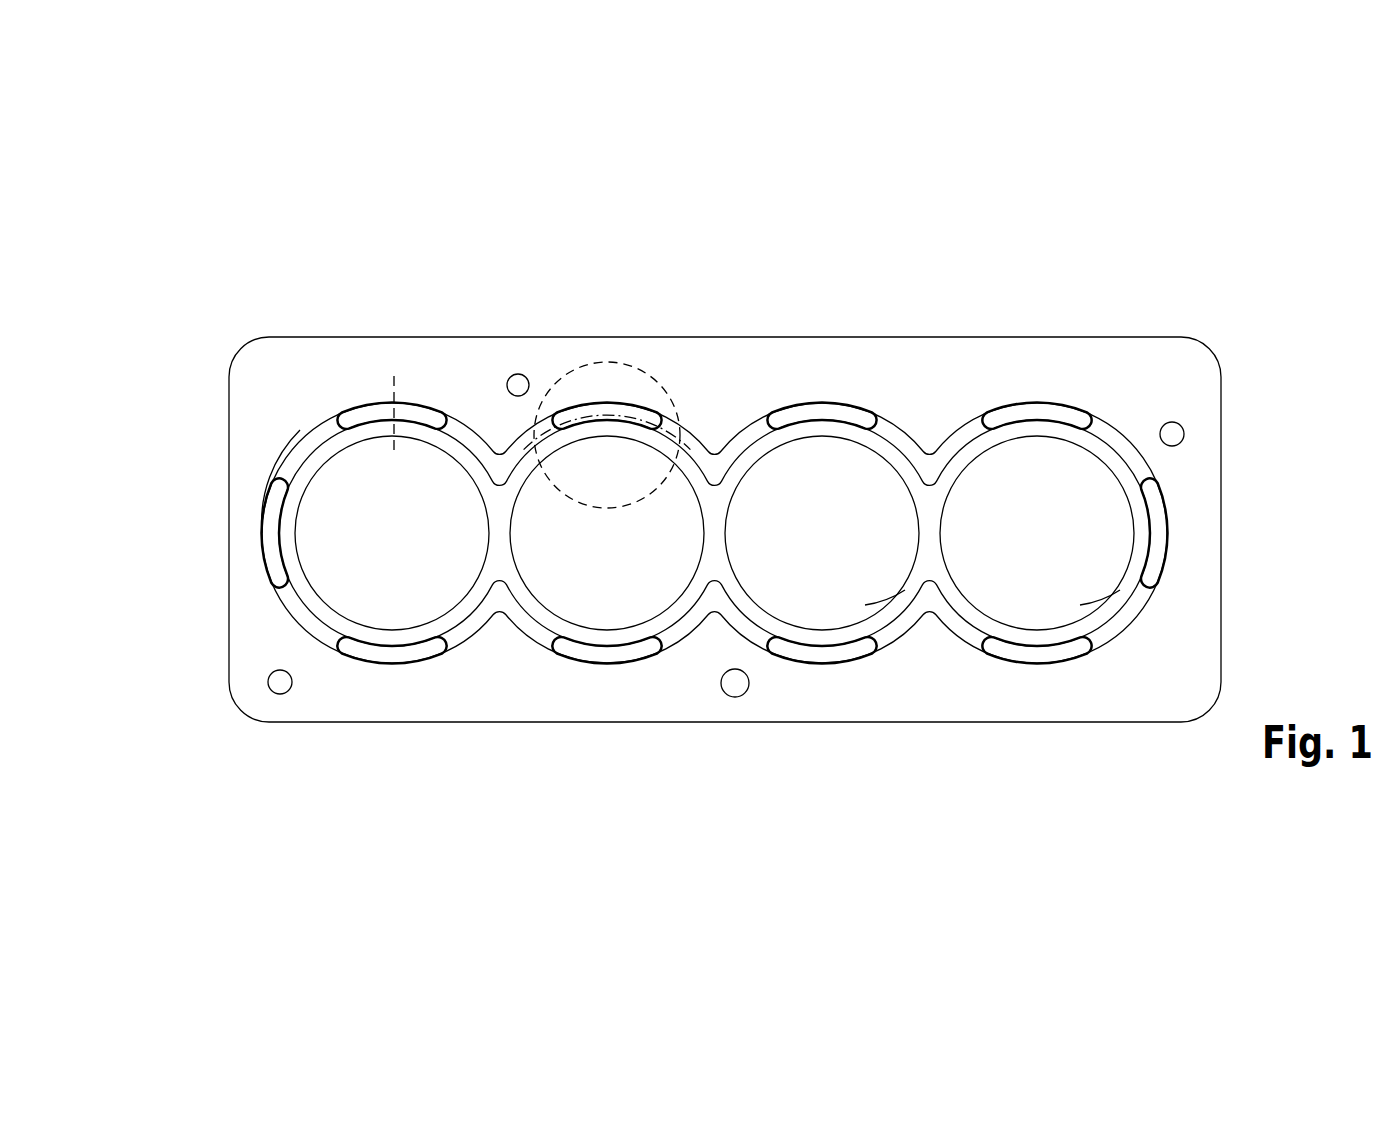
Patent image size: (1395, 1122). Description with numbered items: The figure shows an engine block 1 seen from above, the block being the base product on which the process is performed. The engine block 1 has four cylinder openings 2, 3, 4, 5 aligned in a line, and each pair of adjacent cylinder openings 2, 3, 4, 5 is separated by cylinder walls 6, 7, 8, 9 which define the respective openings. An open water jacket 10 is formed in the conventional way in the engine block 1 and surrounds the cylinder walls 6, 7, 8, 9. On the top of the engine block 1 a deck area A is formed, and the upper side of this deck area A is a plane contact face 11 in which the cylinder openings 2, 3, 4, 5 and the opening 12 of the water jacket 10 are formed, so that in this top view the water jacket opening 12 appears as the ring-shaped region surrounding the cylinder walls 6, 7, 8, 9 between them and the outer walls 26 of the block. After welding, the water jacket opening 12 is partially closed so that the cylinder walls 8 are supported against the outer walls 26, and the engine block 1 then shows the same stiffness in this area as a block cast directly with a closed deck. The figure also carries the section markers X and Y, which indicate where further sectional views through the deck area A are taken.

The engine block 1 is at (206, 338).
The cylinder opening 2 is at (384, 552).
The cylinder opening 3 is at (599, 560).
The cylinder opening 4 is at (814, 547).
The cylinder opening 5 is at (1029, 544).
The cylinder wall 6 is at (322, 455).
The cylinder wall 7 is at (527, 475).
The cylinder wall 8 is at (890, 612).
The cylinder wall 9 is at (1107, 610).
The water jacket 10 is at (290, 460).
The plane contact face 11 is at (894, 387).
The water jacket opening 12 is at (365, 410).
The outer wall 26 is at (602, 380).
The deck area A is at (1150, 337).
The section line X- X is at (394, 416).
The section line Y is at (633, 365).